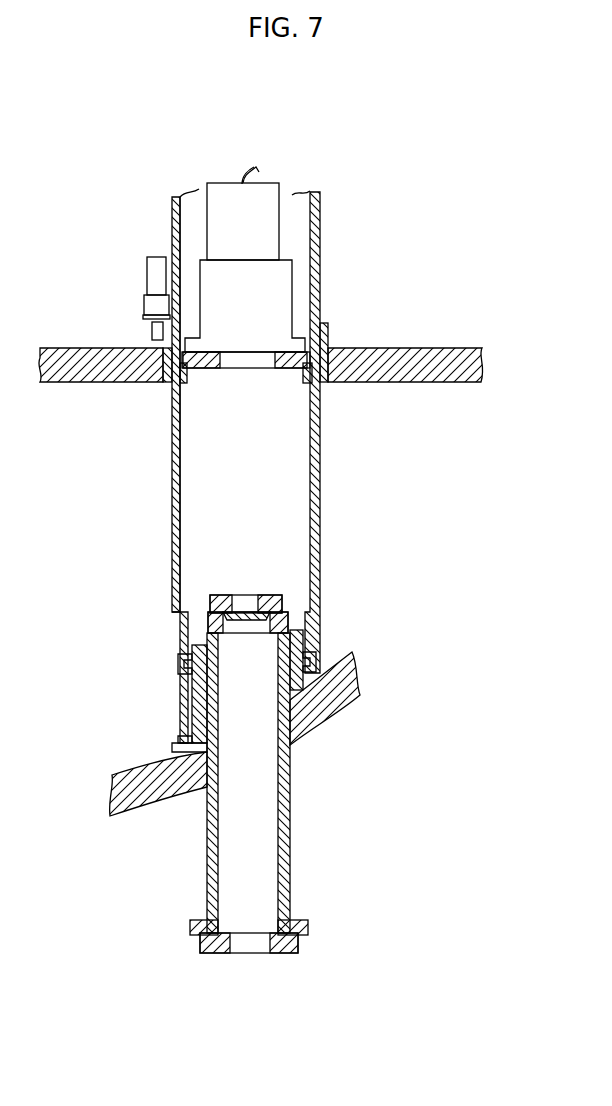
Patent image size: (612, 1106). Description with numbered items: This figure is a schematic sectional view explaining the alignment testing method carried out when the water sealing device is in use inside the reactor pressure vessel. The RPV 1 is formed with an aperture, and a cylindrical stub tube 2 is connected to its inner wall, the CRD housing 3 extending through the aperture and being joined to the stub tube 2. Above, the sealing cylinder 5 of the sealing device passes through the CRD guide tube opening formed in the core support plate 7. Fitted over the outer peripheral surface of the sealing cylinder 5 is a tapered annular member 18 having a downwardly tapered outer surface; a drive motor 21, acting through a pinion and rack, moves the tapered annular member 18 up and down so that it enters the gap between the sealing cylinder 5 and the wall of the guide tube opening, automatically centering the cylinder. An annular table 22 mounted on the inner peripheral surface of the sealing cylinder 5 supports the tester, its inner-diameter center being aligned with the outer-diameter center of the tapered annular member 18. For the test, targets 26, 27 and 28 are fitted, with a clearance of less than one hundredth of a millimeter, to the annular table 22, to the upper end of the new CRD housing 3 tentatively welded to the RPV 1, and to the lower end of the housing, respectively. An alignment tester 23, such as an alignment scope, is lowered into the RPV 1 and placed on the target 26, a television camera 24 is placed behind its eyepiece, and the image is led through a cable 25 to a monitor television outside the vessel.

The RPV 1 is at (107, 795).
The stub tube 2 is at (184, 650).
The CRD housing 3 is at (205, 630).
The sealing cylinder 5 is at (172, 505).
The core support plate 7 is at (107, 385).
The tapered annular member 18 is at (328, 347).
The drive motor 21 is at (143, 312).
The annular table 22 is at (303, 378).
The alignment tester 23 is at (200, 262).
The television camera 24 is at (207, 222).
The cable 25 is at (259, 167).
The target 26 is at (208, 385).
The target 27 is at (210, 600).
The target 28 is at (200, 943).